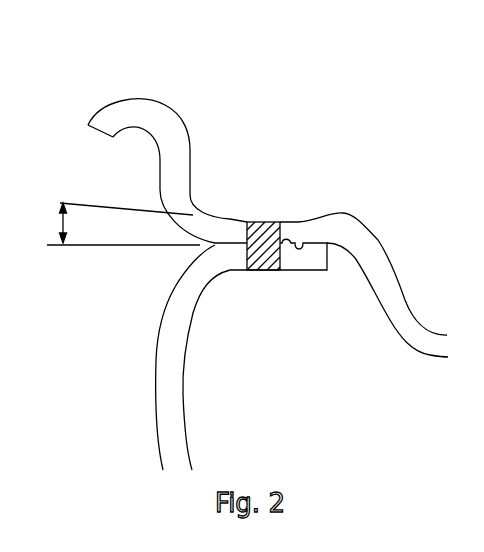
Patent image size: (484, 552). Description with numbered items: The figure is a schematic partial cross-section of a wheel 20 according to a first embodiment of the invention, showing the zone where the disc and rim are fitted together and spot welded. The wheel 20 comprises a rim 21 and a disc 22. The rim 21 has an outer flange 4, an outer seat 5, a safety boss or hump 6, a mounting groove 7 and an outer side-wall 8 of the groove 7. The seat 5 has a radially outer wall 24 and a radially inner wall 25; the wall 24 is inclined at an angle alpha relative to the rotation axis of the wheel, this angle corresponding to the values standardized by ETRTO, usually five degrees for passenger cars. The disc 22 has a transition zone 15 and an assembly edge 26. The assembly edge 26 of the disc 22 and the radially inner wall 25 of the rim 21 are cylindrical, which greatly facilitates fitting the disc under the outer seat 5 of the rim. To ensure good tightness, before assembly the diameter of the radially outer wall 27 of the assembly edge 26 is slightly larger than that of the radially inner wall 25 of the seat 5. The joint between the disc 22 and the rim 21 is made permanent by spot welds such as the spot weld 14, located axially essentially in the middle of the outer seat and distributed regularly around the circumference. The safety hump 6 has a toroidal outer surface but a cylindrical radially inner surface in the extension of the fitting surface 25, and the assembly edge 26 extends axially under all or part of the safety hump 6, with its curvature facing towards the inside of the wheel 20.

The outer flange 4 is at (165, 133).
The outer seat 5 is at (237, 233).
The safety hump 6 is at (338, 232).
The mounting groove 7 is at (443, 345).
The outer side-wall 8 is at (383, 280).
The spot weld 14 is at (257, 260).
The transition zone 15 is at (165, 403).
The wheel 20 is at (287, 142).
The rim 21 is at (321, 182).
The disc 22 is at (135, 320).
The radially outer wall 24 is at (284, 222).
The radially inner wall 25 is at (307, 242).
The assembly edge 26 is at (302, 255).
The radially outer wall of the assembly edge 27 is at (286, 243).